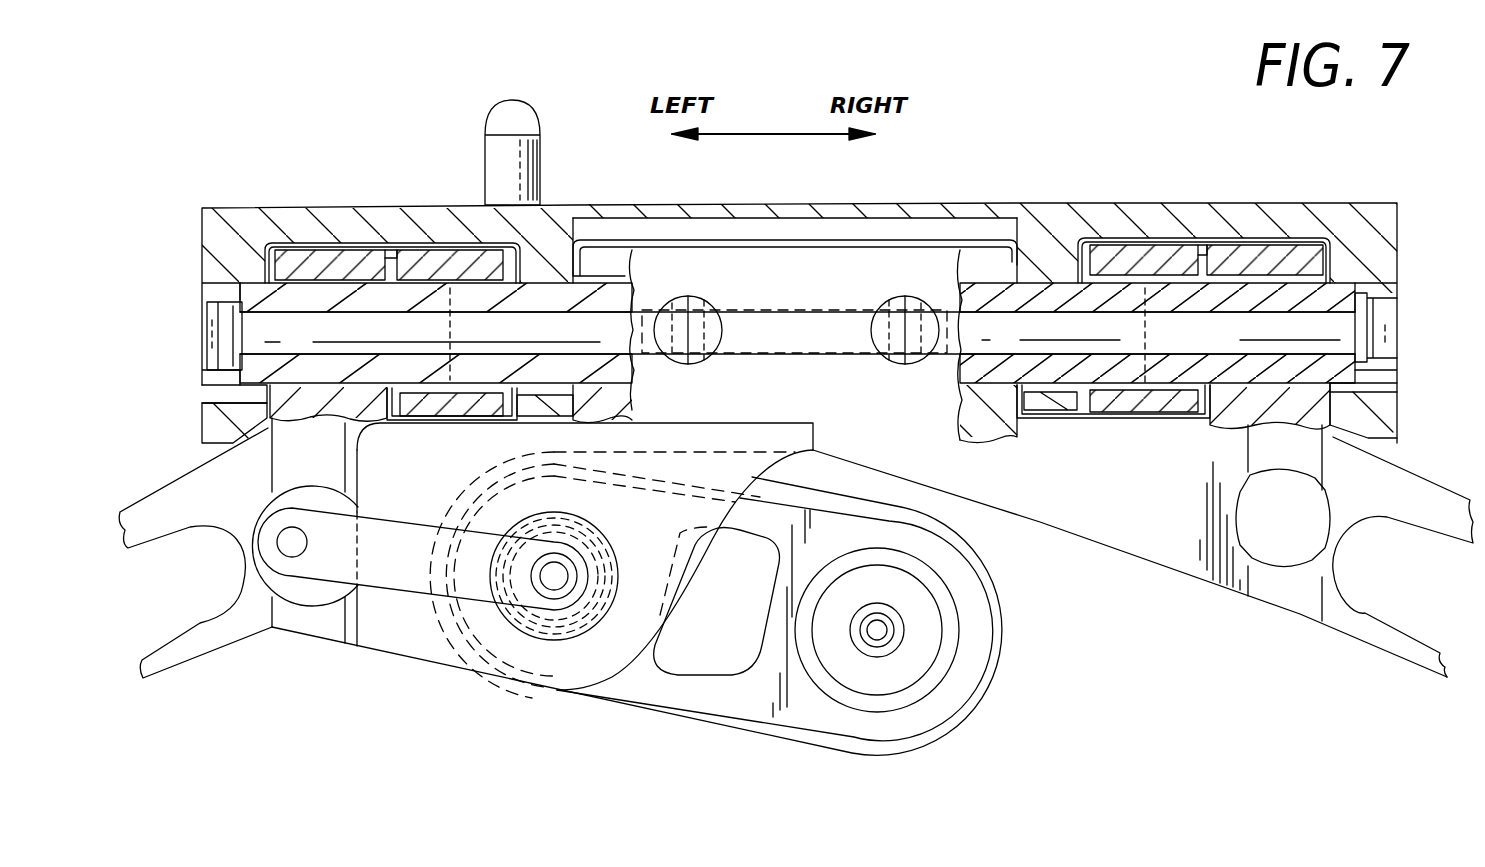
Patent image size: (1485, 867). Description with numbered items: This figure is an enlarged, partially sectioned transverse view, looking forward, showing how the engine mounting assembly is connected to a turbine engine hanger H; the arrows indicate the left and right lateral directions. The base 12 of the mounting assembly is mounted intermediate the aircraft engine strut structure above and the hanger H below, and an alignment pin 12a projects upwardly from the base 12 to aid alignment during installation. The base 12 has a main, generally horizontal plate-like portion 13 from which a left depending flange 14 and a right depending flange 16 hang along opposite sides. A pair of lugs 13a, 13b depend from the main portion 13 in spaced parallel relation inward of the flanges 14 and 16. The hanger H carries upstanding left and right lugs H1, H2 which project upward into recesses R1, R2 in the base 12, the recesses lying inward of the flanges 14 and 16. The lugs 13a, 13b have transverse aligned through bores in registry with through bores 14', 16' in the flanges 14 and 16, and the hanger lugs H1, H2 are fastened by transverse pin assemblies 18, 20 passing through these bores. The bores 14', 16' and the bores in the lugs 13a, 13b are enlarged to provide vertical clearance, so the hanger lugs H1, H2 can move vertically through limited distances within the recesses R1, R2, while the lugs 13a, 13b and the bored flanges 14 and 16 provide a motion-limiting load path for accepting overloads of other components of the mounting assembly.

The base 12 is at (763, 205).
The alignment pin 12a is at (520, 160).
The main plate-like portion 13 is at (1112, 203).
The lug 13a is at (515, 428).
The lug 13b is at (1060, 405).
The left depending flange 14 is at (186, 432).
The through bore 14' is at (186, 400).
The right depending flange 16 is at (1394, 425).
The through bore 16' is at (1397, 390).
The transverse pin assembly 18 is at (202, 292).
The transverse pin assembly 20 is at (1380, 285).
The left hanger lug H1 is at (310, 250).
The left recess R1 is at (392, 250).
The right recess R2 is at (1205, 243).
The right hanger lug H2 is at (1320, 250).
The engine hanger H is at (1157, 543).